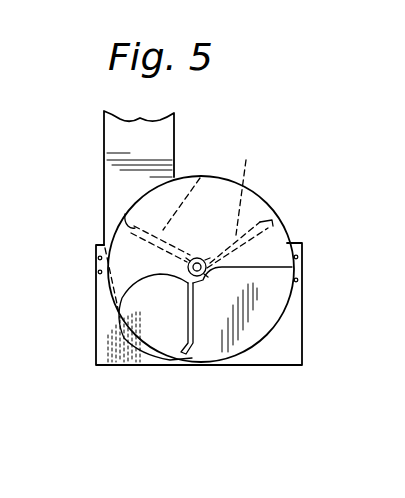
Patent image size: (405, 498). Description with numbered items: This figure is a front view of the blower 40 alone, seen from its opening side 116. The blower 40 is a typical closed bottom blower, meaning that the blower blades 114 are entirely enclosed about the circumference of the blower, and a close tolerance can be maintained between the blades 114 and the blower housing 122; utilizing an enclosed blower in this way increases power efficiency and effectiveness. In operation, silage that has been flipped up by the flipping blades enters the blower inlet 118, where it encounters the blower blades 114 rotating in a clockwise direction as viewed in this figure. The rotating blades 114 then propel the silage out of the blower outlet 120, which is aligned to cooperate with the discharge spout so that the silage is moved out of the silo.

The blower 40 is at (275, 192).
The blower blades 114 is at (188, 176).
The opening side 116 is at (150, 204).
The blower inlet 118 is at (265, 317).
The blower outlet 120 is at (163, 152).
The blower housing 122 is at (148, 340).